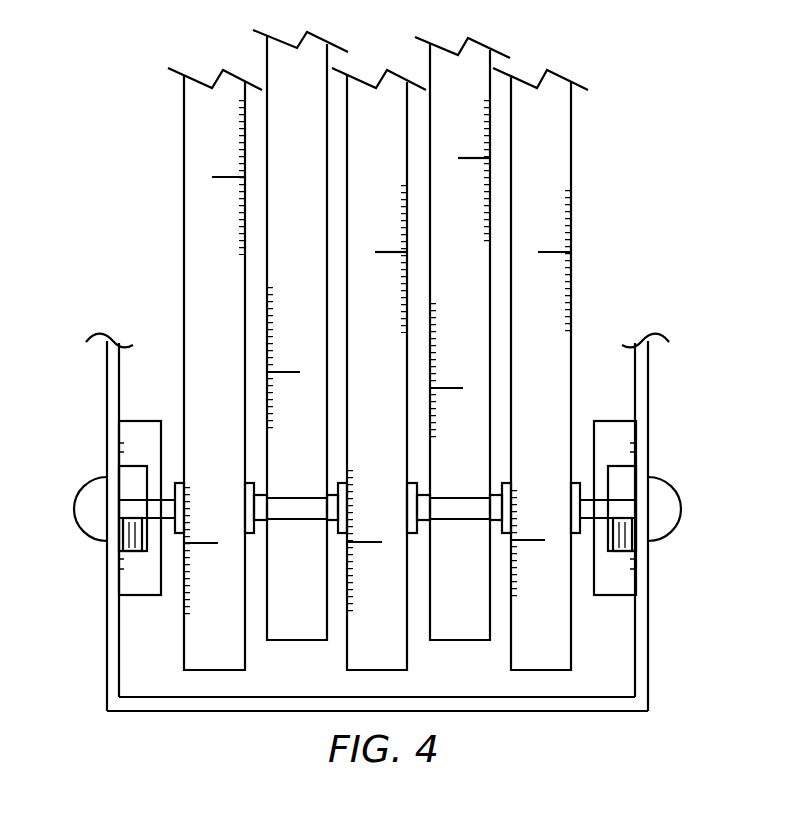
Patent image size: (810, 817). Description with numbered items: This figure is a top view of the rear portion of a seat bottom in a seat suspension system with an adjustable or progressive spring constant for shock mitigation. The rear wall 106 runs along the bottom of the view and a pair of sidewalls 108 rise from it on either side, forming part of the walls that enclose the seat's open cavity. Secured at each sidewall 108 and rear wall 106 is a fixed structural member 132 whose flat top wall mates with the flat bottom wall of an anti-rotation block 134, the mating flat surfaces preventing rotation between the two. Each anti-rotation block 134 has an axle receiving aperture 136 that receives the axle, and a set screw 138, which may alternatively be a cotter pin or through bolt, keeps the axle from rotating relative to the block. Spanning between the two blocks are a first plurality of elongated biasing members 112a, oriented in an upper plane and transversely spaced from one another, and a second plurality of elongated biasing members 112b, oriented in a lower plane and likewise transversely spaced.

The rear wall 106 is at (565, 704).
The sidewall 108 is at (117, 648).
The first plurality of elongated biasing members 112a is at (238, 656).
The second plurality of elongated biasing members 112b is at (320, 627).
The fixed structural member 132 is at (141, 438).
The anti-rotation block 134 is at (132, 466).
The axle receiving aperture 136 is at (133, 511).
The set screw 138 is at (132, 540).